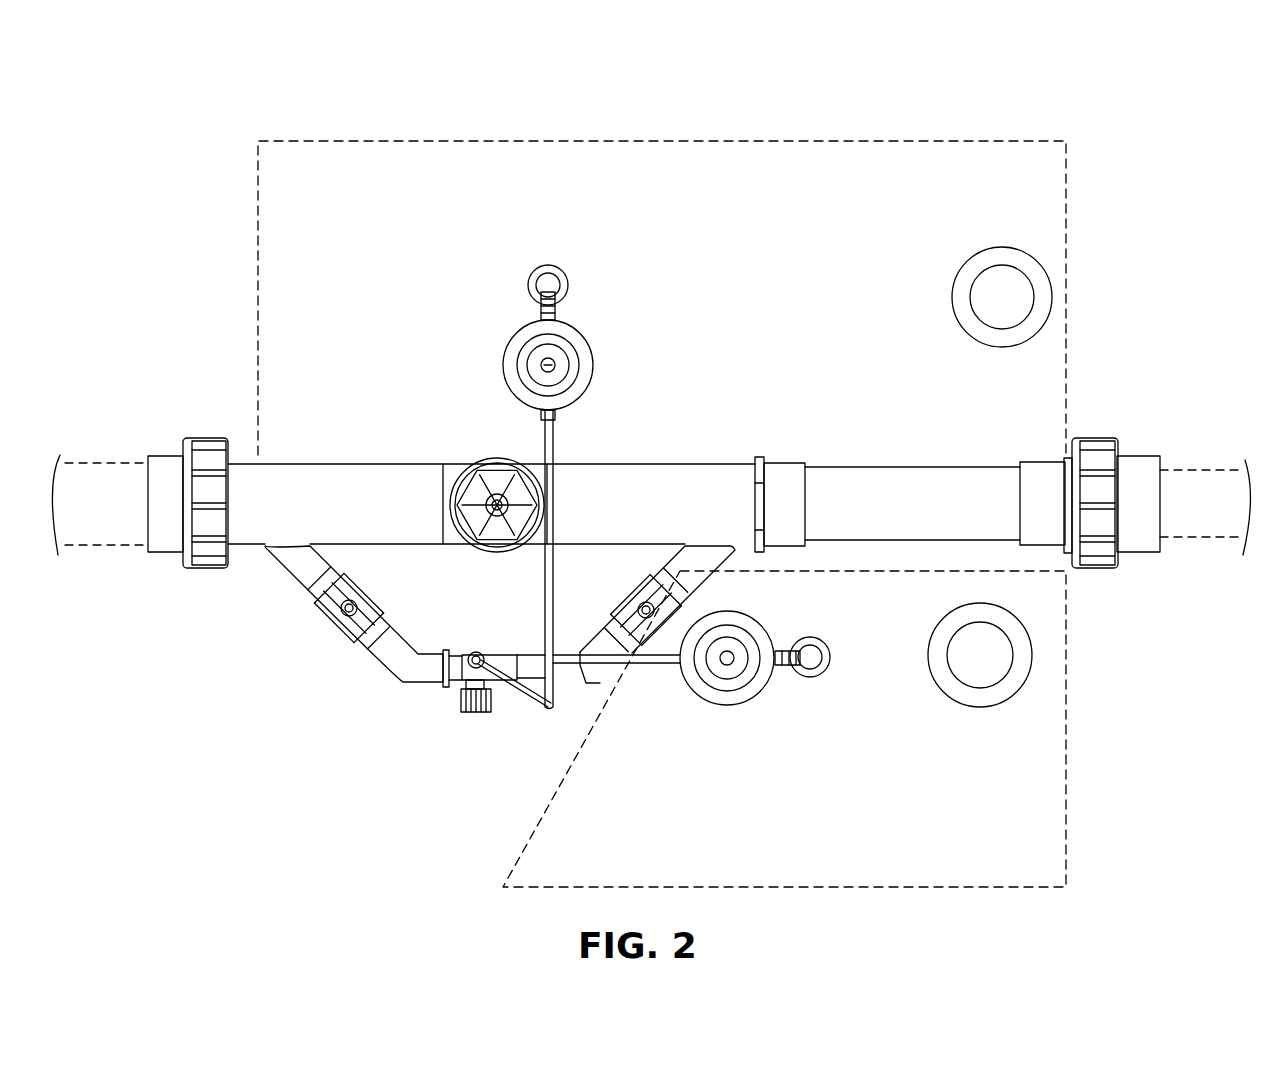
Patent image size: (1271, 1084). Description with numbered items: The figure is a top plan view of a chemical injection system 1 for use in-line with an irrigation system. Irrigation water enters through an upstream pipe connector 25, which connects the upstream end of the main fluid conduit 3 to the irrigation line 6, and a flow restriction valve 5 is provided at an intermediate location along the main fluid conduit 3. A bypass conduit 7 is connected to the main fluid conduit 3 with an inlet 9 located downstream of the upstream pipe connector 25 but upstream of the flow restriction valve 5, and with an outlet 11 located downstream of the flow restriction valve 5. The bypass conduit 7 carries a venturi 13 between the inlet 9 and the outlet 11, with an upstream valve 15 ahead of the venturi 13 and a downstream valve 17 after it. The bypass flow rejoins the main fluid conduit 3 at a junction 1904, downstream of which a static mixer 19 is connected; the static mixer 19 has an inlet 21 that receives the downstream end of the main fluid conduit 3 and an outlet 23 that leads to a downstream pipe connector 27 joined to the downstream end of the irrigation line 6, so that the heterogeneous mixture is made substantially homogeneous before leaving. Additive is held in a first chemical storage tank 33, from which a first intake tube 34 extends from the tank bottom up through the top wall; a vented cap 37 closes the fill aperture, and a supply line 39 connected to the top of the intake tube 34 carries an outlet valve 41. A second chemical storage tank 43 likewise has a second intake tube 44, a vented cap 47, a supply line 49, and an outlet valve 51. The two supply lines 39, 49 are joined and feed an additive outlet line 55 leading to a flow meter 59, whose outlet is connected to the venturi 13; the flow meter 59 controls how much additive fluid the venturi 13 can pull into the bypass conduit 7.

The chemical injection system 1 is at (196, 160).
The main fluid conduit 3 is at (345, 470).
The flow restriction valve 5 is at (490, 458).
The irrigation line 6 is at (112, 445).
The bypass conduit 7 is at (399, 673).
The inlet 9 is at (288, 565).
The outlet 11 is at (726, 641).
The venturi 13 is at (503, 655).
The upstream valve 15 is at (350, 620).
The downstream valve 17 is at (650, 590).
The static mixer 19 is at (898, 500).
The inlet 21 is at (773, 458).
The outlet 23 is at (1040, 445).
The upstream pipe connector 25 is at (203, 440).
The downstream pipe connector 27 is at (1100, 437).
The first chemical storage tank 33 is at (510, 138).
The first intake tube 34 is at (543, 272).
The vented cap 37 is at (1025, 250).
The supply line 39 is at (556, 597).
The outlet valve 41 is at (549, 312).
The second chemical storage tank 43 is at (1068, 812).
The second intake tube 44 is at (826, 640).
The vented cap 47 is at (997, 700).
The supply line 49 is at (640, 668).
The outlet valve 51 is at (738, 700).
The additive outlet line 55 is at (510, 690).
The flow meter 59 is at (480, 740).
The junction 1904 is at (722, 516).